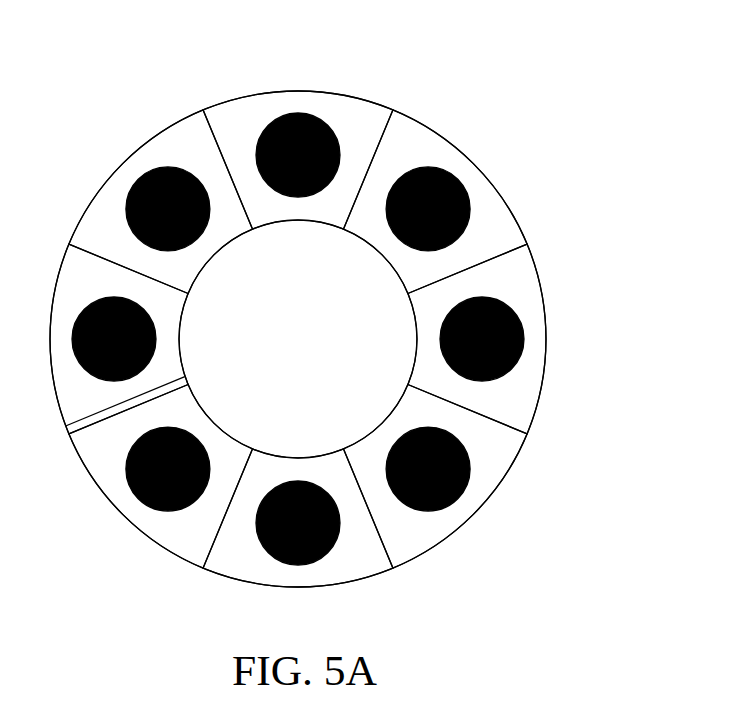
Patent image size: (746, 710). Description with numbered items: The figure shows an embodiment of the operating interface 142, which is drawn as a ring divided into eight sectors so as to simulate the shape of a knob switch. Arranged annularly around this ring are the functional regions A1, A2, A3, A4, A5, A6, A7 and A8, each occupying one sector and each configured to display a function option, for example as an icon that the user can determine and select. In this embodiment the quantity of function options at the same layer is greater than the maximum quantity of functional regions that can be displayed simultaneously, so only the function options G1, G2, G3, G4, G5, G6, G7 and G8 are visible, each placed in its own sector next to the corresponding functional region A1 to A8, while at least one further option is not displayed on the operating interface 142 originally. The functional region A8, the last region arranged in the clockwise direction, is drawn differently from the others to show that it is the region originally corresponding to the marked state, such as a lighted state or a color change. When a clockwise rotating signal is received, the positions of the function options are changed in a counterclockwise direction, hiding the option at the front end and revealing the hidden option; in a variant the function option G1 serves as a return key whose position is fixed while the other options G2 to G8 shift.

The operating interface 142 is at (499, 80).
The function option G1 is at (98, 339).
The function option G2 is at (161, 202).
The function option G3 is at (298, 141).
The function option G4 is at (436, 202).
The function option G5 is at (500, 339).
The function option G6 is at (436, 477).
The function option G7 is at (298, 538).
The function option G8 is at (161, 477).
The functional region A1 is at (114, 324).
The functional region A2 is at (168, 190).
The functional region A3 is at (313, 152).
The functional region A4 is at (447, 209).
The functional region A5 is at (482, 355).
The functional region A6 is at (428, 485).
The functional region A7 is at (281, 524).
The functional region A8 is at (150, 469).